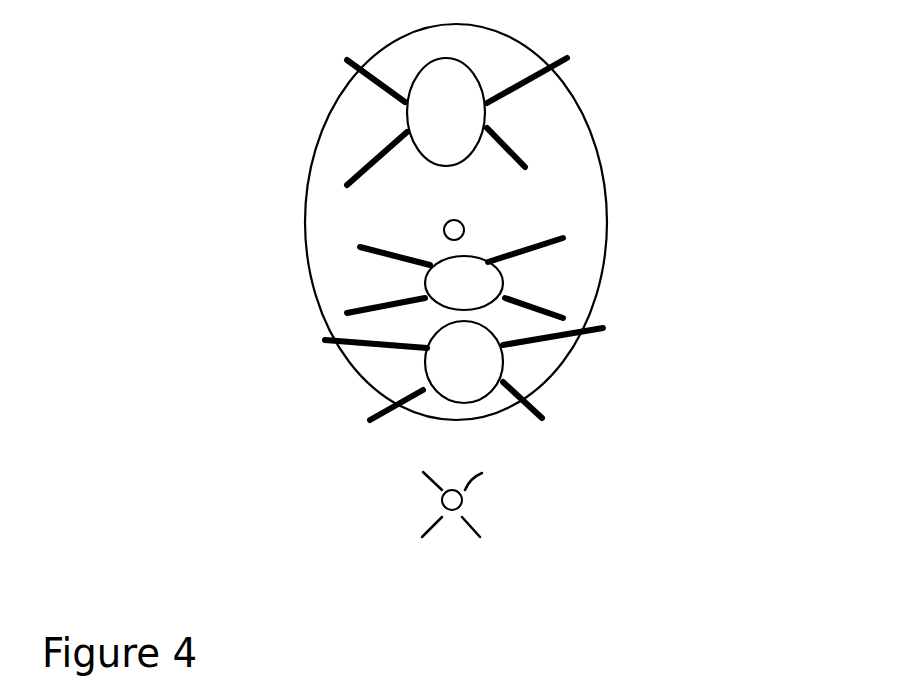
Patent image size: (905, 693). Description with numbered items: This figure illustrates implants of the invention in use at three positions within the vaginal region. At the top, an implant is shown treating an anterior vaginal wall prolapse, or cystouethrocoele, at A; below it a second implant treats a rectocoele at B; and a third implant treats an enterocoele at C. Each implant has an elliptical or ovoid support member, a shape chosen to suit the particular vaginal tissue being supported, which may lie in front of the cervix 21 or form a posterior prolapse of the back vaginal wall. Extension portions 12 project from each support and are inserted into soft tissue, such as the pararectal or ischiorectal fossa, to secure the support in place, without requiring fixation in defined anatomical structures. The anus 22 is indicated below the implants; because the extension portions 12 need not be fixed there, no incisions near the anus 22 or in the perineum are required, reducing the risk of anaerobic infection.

The fixation elements 12 is at (354, 239).
The anterior vaginal wall prolapse treatment A is at (598, 101).
The rectocoele treatment B is at (616, 283).
The enterocoele treatment C is at (556, 362).
The cervix 21 is at (567, 210).
The anus 22 is at (604, 487).